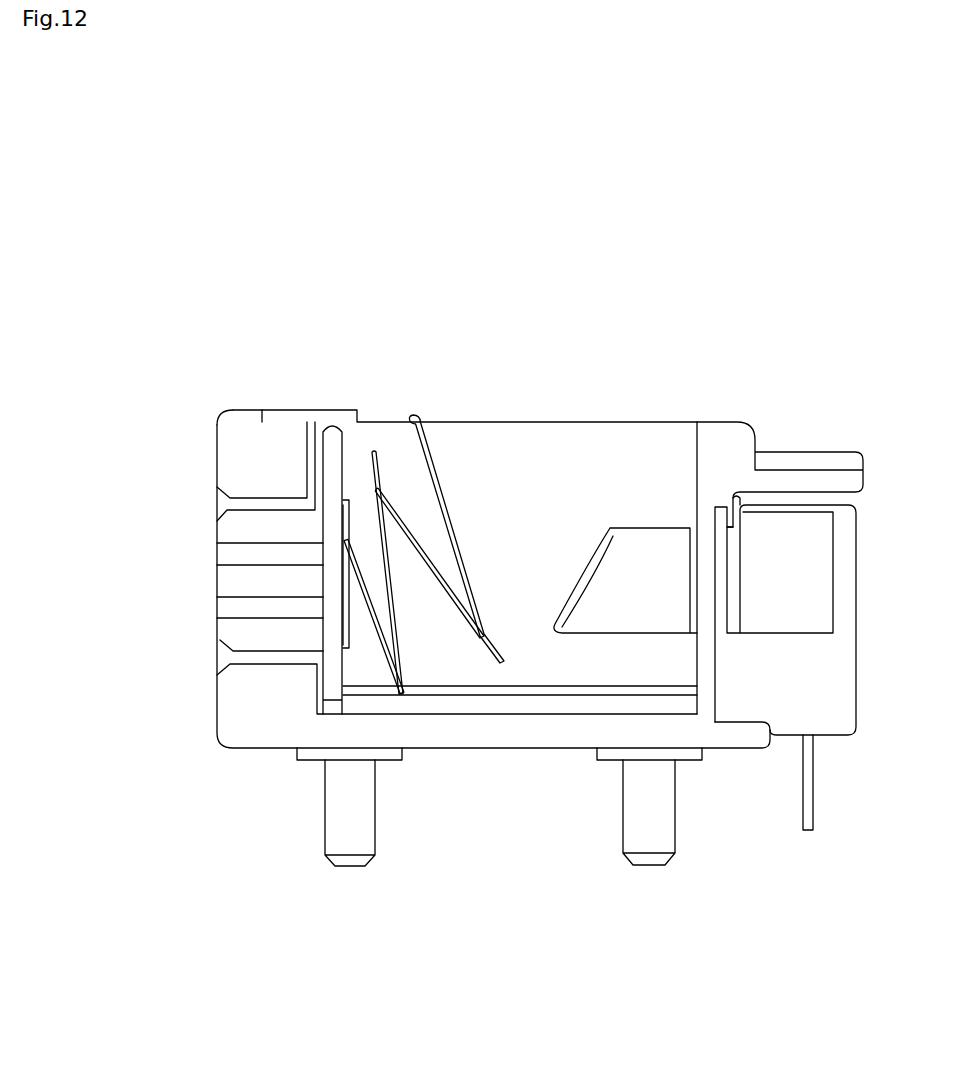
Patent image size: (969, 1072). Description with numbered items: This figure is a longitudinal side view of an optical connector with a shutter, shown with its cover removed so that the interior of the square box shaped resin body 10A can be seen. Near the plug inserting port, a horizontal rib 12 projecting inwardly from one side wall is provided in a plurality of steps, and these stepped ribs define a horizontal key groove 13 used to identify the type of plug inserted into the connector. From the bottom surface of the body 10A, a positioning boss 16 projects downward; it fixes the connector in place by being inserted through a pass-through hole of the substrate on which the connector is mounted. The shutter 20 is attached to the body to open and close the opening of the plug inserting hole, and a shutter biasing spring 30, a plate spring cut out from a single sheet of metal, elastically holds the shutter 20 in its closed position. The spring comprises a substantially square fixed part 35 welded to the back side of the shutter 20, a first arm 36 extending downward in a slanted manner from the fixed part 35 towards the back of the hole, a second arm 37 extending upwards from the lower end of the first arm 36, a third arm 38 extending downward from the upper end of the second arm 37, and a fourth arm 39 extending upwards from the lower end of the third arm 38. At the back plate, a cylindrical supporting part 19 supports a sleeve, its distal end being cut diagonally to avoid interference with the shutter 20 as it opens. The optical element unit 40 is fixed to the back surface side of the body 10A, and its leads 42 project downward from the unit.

The body 10A is at (535, 748).
The horizontal rib 12 is at (226, 526).
The horizontal key groove 13 is at (226, 554).
The positioning boss 16 is at (321, 835).
The cylindrical supporting part 19 is at (643, 528).
The shutter 20 is at (347, 450).
The shutter biasing spring 30 is at (472, 476).
The fixed part 35 is at (348, 632).
The first arm 36 is at (406, 690).
The second arm 37 is at (392, 448).
The third arm 38 is at (445, 603).
The fourth arm 39 is at (447, 448).
The optical element unit 40 is at (843, 665).
The lead 42 is at (813, 810).